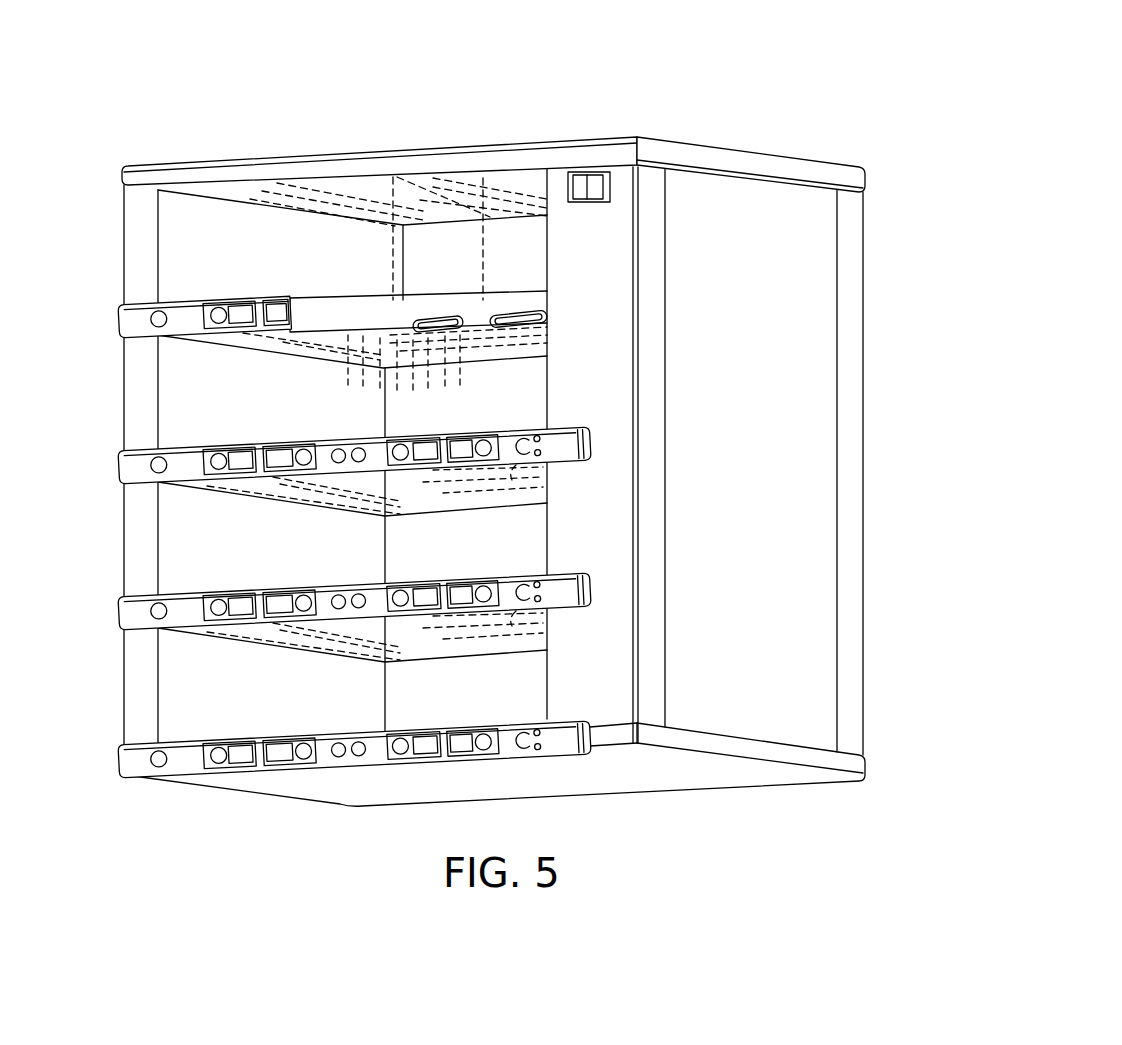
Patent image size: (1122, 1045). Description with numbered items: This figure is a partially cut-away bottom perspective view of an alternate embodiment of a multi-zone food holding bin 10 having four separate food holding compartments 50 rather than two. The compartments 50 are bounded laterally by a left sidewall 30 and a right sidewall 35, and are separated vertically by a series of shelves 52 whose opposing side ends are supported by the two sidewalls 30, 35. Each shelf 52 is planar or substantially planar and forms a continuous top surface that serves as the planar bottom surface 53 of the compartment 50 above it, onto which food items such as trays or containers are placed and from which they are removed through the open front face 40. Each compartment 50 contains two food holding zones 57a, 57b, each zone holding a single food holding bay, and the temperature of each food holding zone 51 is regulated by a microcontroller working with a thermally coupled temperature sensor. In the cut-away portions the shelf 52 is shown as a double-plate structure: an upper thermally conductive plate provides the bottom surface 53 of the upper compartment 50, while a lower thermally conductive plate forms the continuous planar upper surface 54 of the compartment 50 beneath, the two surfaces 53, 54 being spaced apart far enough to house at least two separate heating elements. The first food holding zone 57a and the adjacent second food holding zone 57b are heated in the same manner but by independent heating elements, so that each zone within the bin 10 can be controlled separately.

The multi-zone food holding bin 10 is at (483, 434).
The left sidewall 30 is at (101, 783).
The right sidewall 35 is at (808, 658).
The open front face 40 is at (101, 127).
The food holding compartment 50 is at (175, 206).
The food holding zone 51 is at (258, 298).
The shelf 52 is at (303, 350).
The planar bottom surface 53 is at (443, 483).
The planar upper surface 54 is at (237, 347).
The first food holding zone 57a is at (267, 250).
The second food holding zone 57b is at (497, 238).